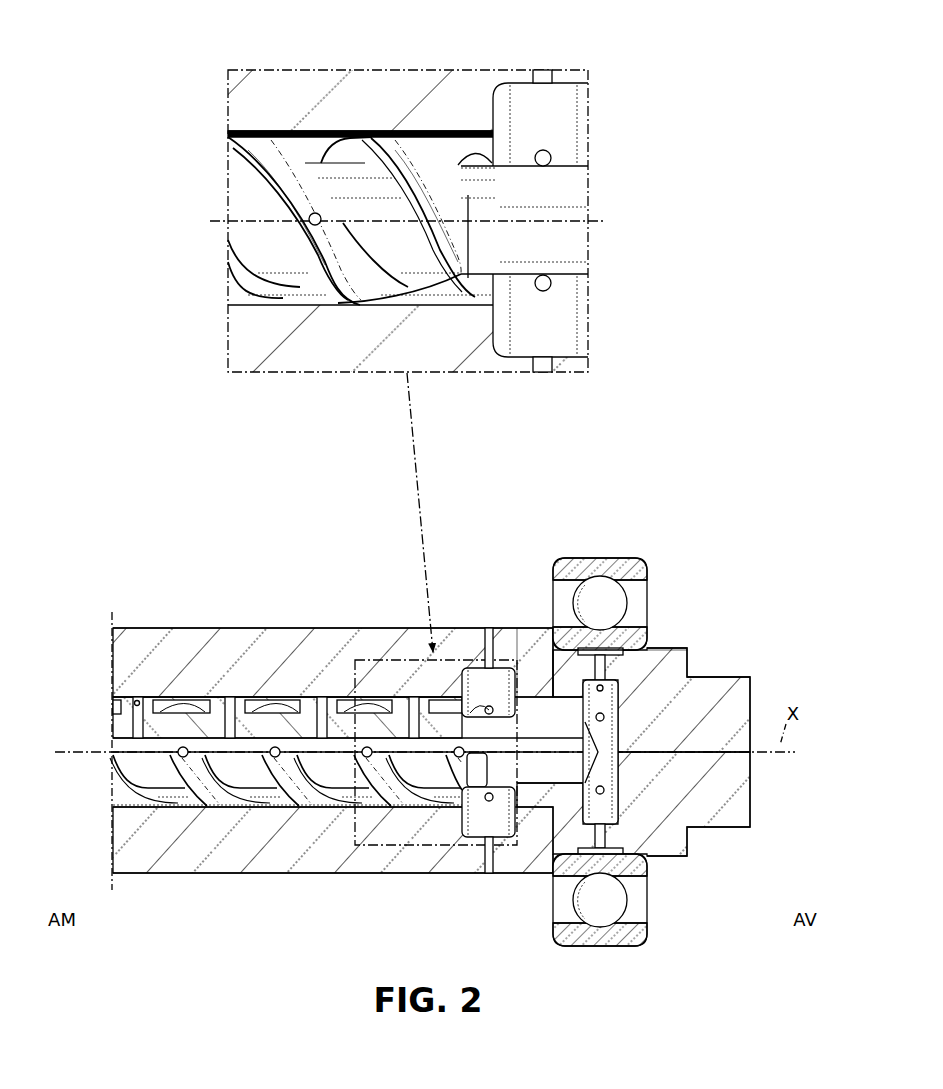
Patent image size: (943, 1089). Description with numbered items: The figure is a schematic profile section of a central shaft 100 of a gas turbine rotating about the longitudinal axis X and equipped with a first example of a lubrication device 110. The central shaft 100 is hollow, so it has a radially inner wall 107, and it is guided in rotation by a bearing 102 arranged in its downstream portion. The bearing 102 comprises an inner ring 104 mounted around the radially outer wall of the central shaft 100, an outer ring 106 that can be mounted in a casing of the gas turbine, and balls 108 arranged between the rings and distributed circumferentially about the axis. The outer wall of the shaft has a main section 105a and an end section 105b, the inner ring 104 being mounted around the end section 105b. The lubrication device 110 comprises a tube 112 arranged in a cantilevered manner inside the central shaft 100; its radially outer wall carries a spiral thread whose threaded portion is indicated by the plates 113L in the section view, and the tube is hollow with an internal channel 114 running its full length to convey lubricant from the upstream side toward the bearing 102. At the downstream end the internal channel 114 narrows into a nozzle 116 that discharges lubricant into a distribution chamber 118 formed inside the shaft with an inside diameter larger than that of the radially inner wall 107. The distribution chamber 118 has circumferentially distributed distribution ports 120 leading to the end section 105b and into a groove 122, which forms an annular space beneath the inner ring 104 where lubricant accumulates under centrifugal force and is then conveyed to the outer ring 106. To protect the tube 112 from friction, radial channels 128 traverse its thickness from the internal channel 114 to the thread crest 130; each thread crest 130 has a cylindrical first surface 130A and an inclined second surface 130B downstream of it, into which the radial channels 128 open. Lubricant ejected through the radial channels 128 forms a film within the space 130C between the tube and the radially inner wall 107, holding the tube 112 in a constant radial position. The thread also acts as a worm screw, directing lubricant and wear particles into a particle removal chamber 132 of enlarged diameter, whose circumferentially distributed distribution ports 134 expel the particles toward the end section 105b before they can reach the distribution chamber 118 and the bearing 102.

The central shaft 100 is at (200, 628).
The bearing 102 is at (660, 530).
The inner ring 104 is at (563, 640).
The main section 105a is at (452, 628).
The end section 105b is at (648, 653).
The outer ring 106 is at (582, 565).
The radially inner wall 107 is at (188, 808).
The balls 108 is at (607, 590).
The lubrication device 110 is at (88, 697).
The tube 112 is at (243, 238).
The plates 113L is at (265, 710).
The internal channel 114 is at (125, 748).
The nozzle 116 is at (606, 754).
The distribution chamber 118 is at (592, 818).
The distribution ports 120 is at (612, 665).
The groove 122 is at (614, 853).
The radial channels 128 is at (315, 226).
The thread crest 130 is at (334, 700).
The first radially outer surface 130A is at (230, 133).
The second surface 130B is at (273, 157).
The space 130C is at (423, 137).
The particle removal chamber 132 is at (458, 827).
The distribution ports 134 is at (489, 877).